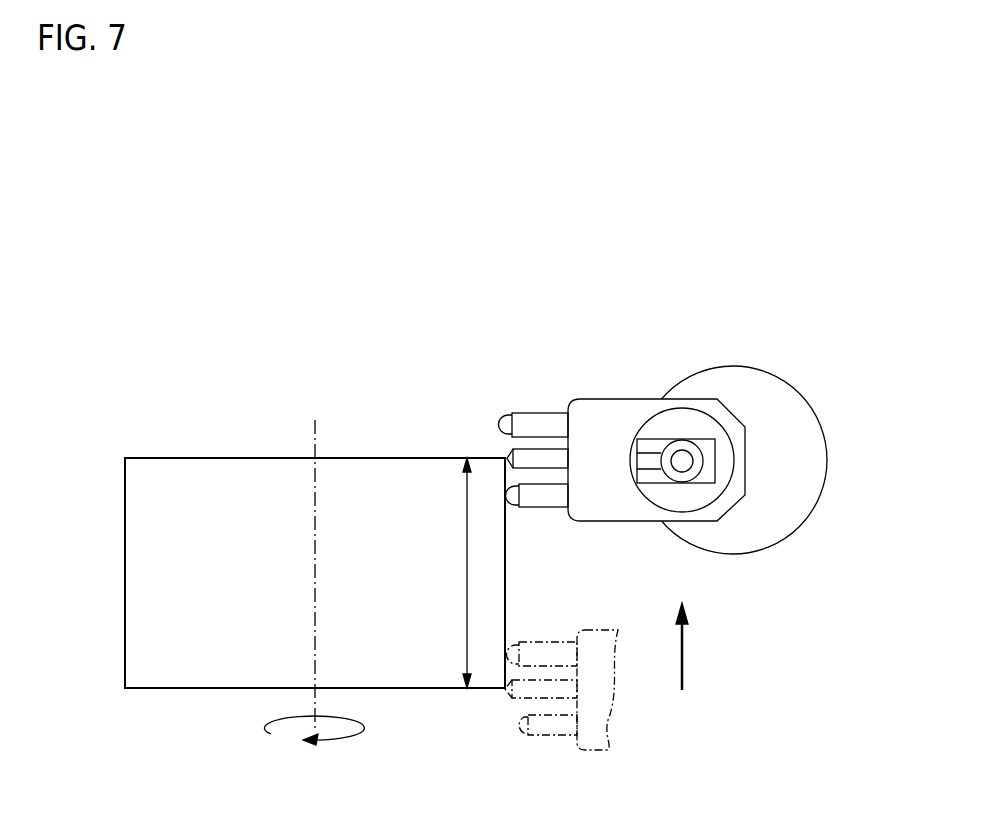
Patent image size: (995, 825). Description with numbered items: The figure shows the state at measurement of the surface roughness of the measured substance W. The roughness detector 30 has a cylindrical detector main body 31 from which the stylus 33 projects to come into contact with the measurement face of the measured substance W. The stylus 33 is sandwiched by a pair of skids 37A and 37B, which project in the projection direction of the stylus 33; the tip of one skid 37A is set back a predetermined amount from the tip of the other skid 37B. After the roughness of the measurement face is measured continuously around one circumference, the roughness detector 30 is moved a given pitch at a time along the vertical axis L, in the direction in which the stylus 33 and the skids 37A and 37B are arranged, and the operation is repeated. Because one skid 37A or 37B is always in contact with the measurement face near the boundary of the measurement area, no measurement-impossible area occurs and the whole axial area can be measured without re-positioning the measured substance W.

The roughness detector 30 is at (697, 401).
The detector main body 31 is at (777, 382).
The stylus 33 is at (512, 450).
The skid 37A is at (536, 413).
The skid 37B is at (545, 508).
The measured substance W is at (180, 457).
The vertical axis L is at (313, 564).